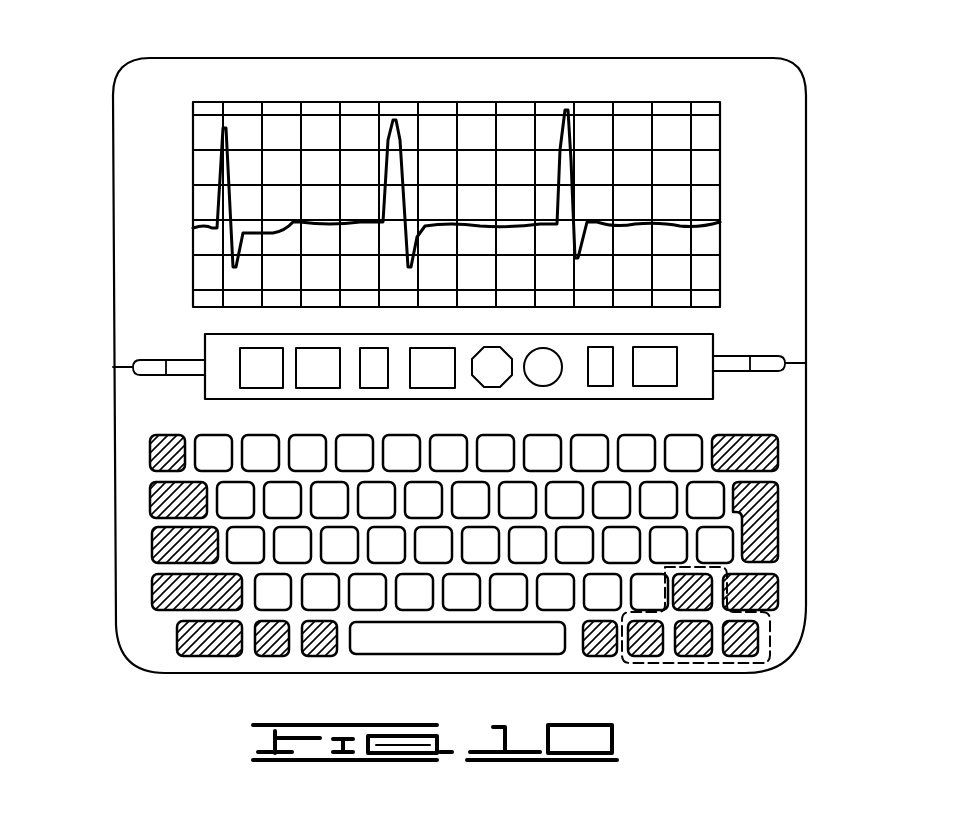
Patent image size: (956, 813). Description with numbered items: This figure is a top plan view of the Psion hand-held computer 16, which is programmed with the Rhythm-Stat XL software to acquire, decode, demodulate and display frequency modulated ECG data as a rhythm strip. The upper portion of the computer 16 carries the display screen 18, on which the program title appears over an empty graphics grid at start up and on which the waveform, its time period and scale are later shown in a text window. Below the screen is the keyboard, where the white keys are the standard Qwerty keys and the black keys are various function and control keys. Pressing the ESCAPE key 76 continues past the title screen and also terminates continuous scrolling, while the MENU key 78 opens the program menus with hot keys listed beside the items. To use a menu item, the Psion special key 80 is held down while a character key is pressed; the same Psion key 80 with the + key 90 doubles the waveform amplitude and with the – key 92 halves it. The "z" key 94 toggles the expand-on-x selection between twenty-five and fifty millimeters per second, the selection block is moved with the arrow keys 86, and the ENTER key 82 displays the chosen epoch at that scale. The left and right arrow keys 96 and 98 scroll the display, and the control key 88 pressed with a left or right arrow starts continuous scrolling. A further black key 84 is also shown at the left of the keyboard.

The Psion 3a hand-held computer 16 is at (763, 408).
The display screen 18 is at (678, 130).
The ESCAPE key 76 is at (152, 450).
The MENU key 78 is at (270, 656).
The Psion special key 80 is at (193, 656).
The ENTER key 82 is at (775, 532).
The tab key 84 is at (153, 500).
The arrow keys 86 is at (758, 680).
The control key 88 is at (152, 548).
The + key 90 is at (700, 452).
The – key 92 is at (712, 500).
The "z" key 94 is at (272, 594).
The left arrow key 96 is at (650, 647).
The right arrow key 98 is at (752, 640).